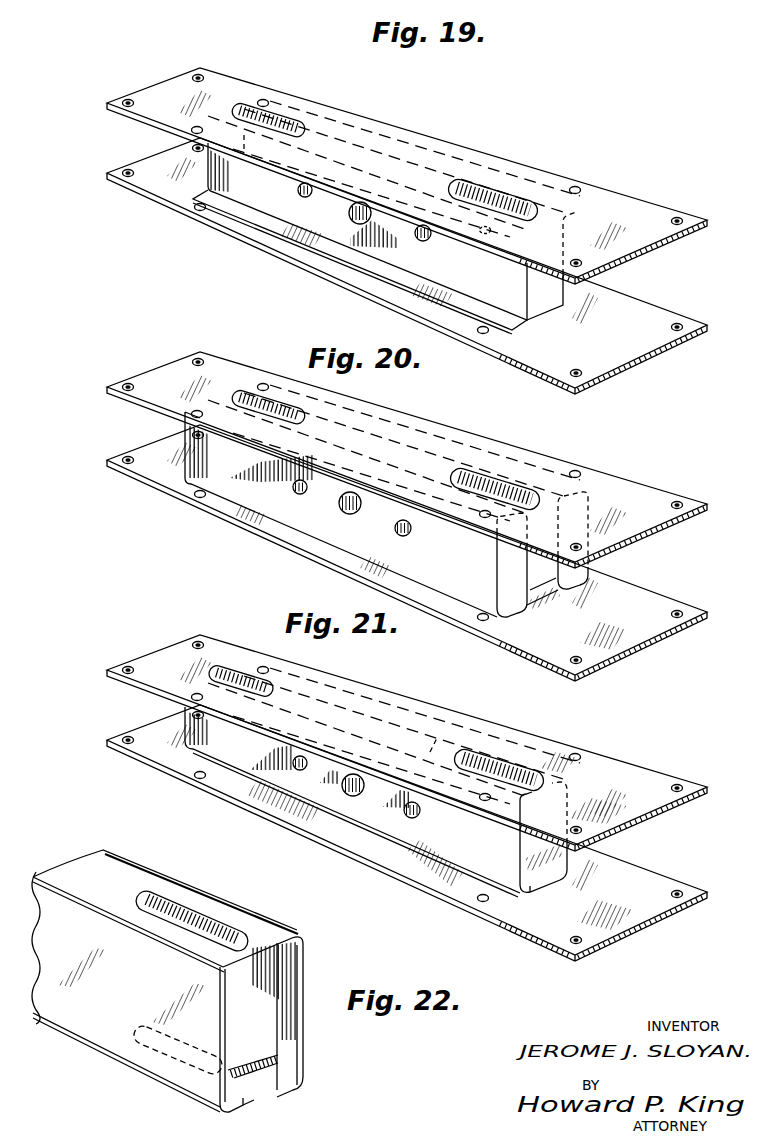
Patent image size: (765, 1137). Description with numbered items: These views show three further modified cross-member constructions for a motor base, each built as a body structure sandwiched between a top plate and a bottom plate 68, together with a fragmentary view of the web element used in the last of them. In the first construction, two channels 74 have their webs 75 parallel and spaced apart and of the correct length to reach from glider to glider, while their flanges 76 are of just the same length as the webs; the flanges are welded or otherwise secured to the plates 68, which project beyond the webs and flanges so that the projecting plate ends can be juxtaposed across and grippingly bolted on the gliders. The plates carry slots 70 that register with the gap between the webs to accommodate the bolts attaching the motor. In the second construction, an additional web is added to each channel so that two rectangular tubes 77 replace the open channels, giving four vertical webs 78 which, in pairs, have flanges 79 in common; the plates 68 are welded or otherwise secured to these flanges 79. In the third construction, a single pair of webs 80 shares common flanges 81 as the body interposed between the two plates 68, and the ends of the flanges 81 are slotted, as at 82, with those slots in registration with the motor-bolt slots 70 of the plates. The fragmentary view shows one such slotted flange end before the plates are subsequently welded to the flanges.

In FIG. 19, the plate 68 is at (647, 208).
In FIG. 20, the plate 68 is at (660, 498).
In FIG. 21, the plate 68 is at (657, 782).
In FIG. 19, the slot 70 is at (290, 120).
In FIG. 20, the slot 70 is at (260, 392).
In FIG. 21, the slot 70 is at (273, 683).
In FIG. 19, the channel 74 is at (565, 309).
In FIG. 19, the web 75 is at (543, 267).
In FIG. 19, the flange 76 is at (580, 183).
In FIG. 20, the rectangular tube 77 is at (566, 600).
In FIG. 20, the vertical web 78 is at (512, 577).
In FIG. 20, the flange 79 is at (583, 490).
In FIG. 21, the web 80 is at (523, 866).
In FIG. 22, the web 80 is at (297, 990).
In FIG. 21, the flange 81 is at (440, 732).
In FIG. 22, the flange 81 is at (133, 875).
In FIG. 21, the slot 82 is at (557, 883).
In FIG. 22, the slot 82 is at (250, 930).